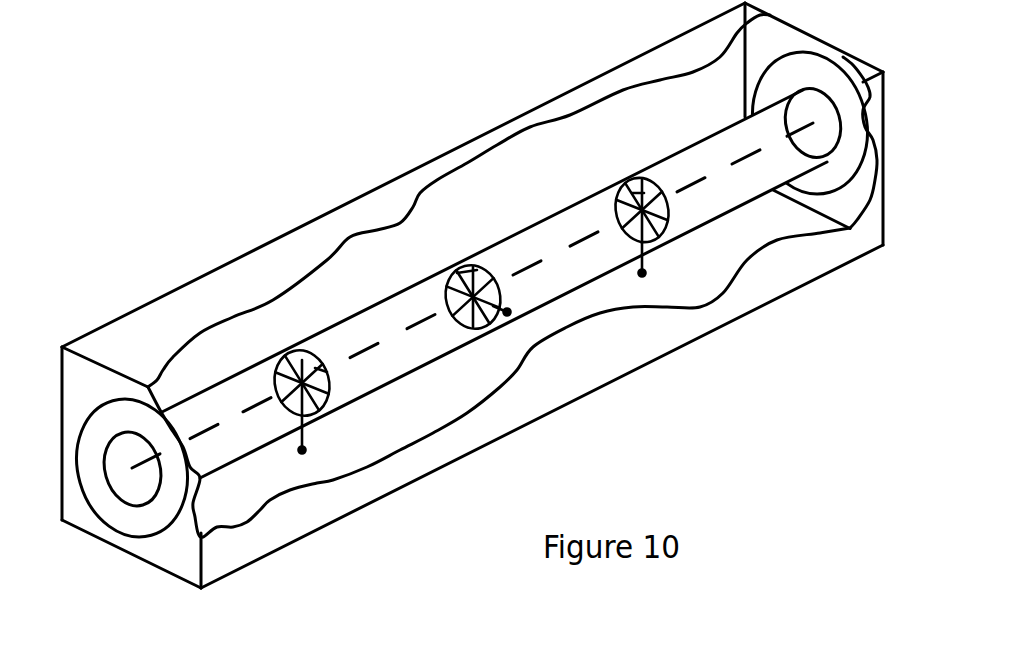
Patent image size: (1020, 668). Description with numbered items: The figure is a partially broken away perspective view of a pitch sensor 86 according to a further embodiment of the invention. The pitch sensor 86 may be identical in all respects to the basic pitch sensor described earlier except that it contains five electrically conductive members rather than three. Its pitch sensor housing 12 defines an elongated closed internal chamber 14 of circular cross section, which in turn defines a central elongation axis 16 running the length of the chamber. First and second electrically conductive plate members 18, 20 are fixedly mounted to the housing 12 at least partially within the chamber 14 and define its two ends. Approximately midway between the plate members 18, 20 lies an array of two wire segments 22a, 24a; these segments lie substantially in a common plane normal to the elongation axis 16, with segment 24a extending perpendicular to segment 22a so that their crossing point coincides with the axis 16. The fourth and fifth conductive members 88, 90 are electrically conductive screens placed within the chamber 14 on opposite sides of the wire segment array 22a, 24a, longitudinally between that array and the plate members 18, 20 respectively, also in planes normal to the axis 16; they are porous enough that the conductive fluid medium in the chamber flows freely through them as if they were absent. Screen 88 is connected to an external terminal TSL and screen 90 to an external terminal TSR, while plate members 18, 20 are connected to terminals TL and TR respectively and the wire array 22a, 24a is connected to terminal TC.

The pitch sensor housing 12 is at (785, 268).
The elongated closed internal chamber 14 is at (527, 292).
The central elongation axis 16 is at (363, 352).
The first electrically conductive plate member 18 is at (126, 515).
The second electrically conductive plate member 20 is at (827, 180).
The wire segment 22a is at (453, 267).
The wire segment 24a is at (488, 308).
The pitch sensor 86 is at (390, 146).
The fourth electrically conductive member 88 is at (312, 357).
The fifth electrically conductive member 90 is at (618, 188).
The terminal TL is at (120, 478).
The terminal TR is at (818, 118).
The terminal TC is at (510, 317).
The external terminal TSL is at (305, 449).
The external terminal TSR is at (645, 272).